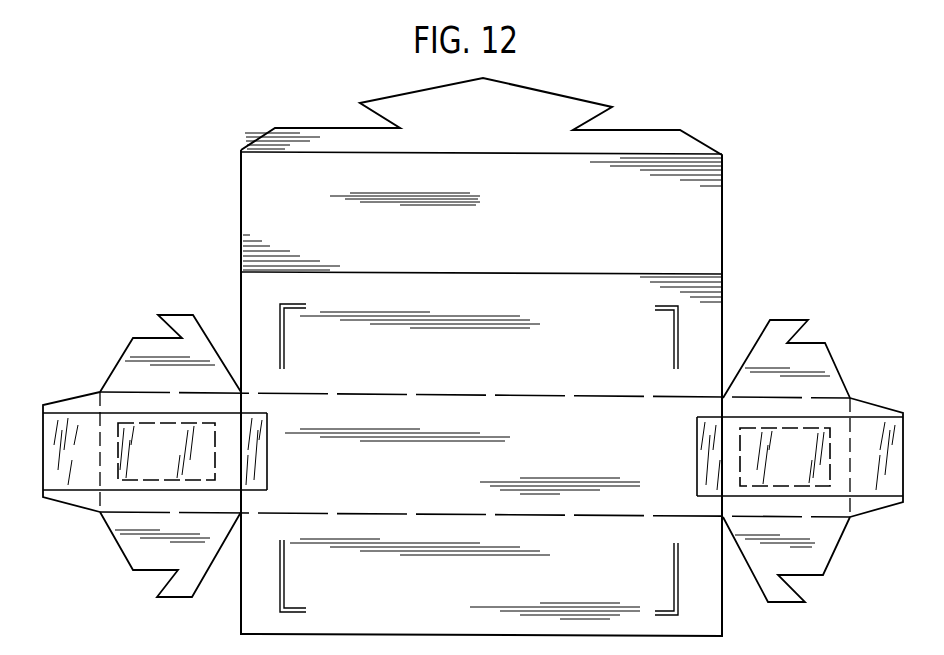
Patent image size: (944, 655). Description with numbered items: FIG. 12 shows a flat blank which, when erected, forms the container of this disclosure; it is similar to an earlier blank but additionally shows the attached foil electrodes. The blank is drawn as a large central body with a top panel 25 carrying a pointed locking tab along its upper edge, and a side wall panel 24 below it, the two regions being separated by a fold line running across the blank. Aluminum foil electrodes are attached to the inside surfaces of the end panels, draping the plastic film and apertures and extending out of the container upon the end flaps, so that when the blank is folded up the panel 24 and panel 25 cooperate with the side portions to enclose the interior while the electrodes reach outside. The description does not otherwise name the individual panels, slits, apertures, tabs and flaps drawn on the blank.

The side wall panel 24 is at (703, 320).
The top panel with locking tab 25 is at (704, 207).